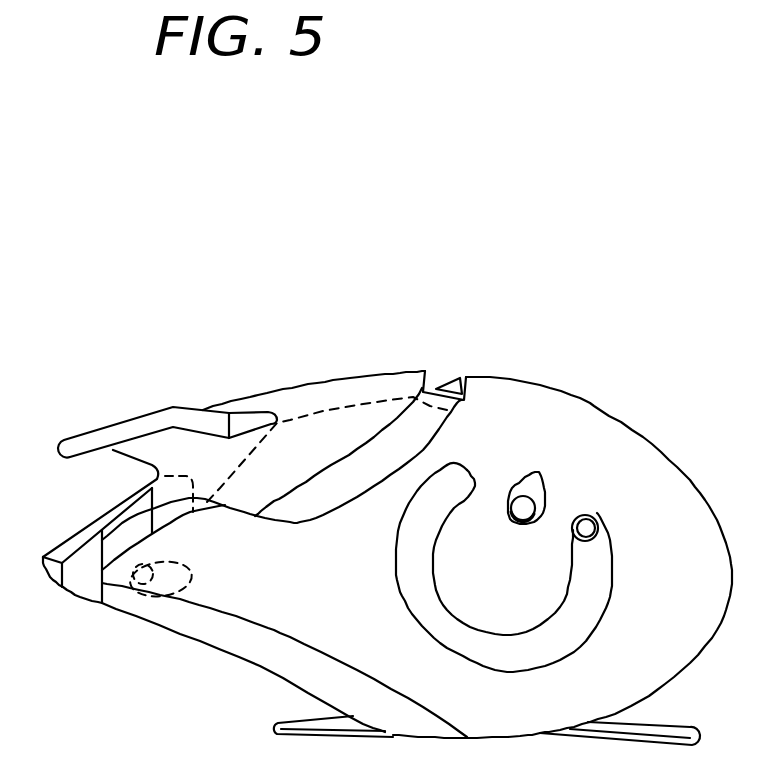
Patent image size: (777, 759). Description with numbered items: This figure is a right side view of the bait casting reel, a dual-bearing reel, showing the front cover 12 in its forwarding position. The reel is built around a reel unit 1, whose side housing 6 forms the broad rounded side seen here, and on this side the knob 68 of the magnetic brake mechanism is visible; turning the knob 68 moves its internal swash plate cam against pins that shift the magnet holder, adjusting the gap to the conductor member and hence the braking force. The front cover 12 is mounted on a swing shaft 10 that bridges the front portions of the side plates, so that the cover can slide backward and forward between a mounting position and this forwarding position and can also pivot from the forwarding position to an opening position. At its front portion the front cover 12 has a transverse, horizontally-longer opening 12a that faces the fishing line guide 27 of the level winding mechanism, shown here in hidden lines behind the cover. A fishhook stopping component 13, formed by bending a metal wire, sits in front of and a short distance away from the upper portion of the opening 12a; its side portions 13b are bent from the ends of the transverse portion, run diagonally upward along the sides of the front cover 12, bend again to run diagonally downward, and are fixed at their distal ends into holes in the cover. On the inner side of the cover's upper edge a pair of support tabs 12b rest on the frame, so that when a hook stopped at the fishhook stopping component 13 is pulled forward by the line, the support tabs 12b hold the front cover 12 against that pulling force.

The reel unit 1 is at (548, 363).
The case body 6 is at (590, 438).
The knob 68 is at (593, 516).
The front cover 12 is at (348, 370).
The support tabs 12b is at (442, 388).
The fishhook stopping component 13 is at (222, 410).
The side portions 13b is at (153, 420).
The opening 12a is at (85, 531).
The fishing line guide 27 is at (140, 491).
The swing shaft 10 is at (138, 598).